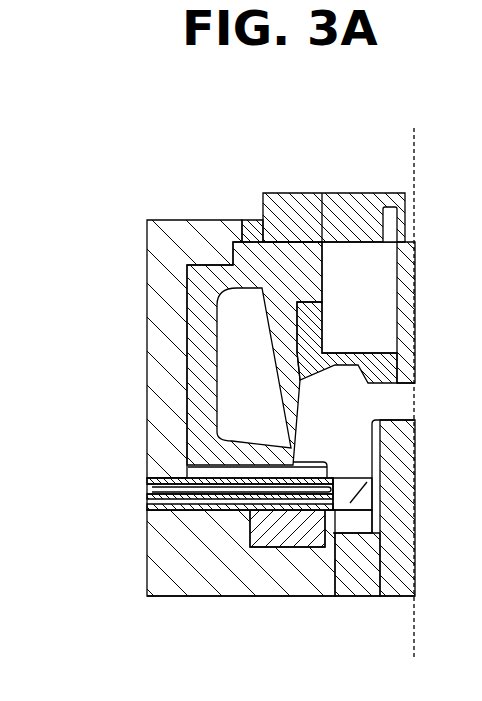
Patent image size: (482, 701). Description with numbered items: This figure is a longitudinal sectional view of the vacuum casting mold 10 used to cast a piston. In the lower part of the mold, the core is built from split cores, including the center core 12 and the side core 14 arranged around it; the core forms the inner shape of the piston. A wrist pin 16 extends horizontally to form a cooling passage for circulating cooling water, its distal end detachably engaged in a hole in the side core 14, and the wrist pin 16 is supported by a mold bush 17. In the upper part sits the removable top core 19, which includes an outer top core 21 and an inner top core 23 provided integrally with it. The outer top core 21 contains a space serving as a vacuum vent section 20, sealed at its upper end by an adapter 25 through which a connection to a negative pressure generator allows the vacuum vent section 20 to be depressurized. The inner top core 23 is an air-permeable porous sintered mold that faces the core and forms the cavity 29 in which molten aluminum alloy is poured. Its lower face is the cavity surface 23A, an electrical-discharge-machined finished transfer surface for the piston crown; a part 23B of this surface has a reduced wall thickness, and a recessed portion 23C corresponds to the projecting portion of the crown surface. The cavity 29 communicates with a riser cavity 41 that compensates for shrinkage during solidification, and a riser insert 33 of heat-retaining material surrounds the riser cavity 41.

The vacuum casting mold 10 is at (137, 197).
The center core 12 is at (402, 590).
The side core 14 is at (358, 590).
The wrist pin 16 is at (147, 491).
The mold bush 17 is at (303, 548).
The top core 19 is at (263, 191).
The vacuum vent section 20 is at (362, 252).
The outer top core 21 is at (254, 240).
The inner top core 23 is at (300, 329).
The cavity surface 23A is at (385, 402).
The part 23B is at (347, 236).
The recessed portion 23C is at (343, 374).
The adapter 25 is at (291, 194).
The cavity 29 is at (366, 336).
The riser insert 33 is at (183, 350).
The riser cavity 41 is at (232, 411).